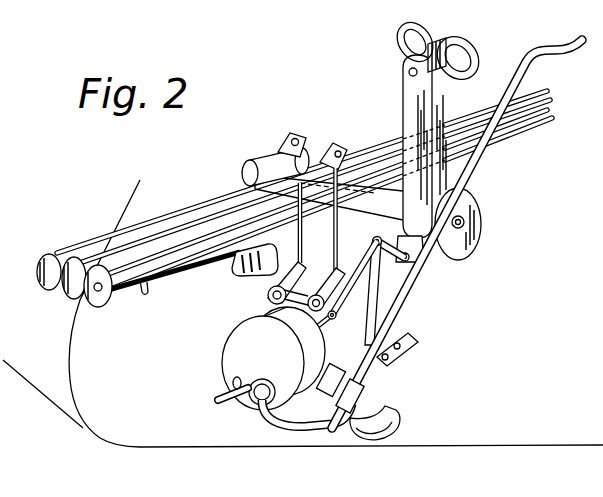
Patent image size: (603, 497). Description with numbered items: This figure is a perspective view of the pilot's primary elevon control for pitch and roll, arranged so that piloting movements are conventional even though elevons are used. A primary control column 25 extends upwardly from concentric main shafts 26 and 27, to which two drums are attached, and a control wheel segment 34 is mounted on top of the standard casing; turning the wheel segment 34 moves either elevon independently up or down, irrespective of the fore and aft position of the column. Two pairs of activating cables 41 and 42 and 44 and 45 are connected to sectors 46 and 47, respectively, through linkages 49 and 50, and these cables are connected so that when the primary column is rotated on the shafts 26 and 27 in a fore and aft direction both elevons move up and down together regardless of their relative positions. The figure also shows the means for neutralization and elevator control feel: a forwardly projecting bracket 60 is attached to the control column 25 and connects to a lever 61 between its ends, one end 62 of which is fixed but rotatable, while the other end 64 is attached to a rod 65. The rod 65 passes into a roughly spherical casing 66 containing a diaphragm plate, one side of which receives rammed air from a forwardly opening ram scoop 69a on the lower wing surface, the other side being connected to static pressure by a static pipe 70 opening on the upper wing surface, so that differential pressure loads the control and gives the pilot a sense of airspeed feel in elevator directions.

The primary control column 25 is at (403, 71).
The main shaft 26 is at (372, 189).
The main shaft 27 is at (470, 222).
The control wheel segment 34 is at (478, 56).
The activating cable 41 is at (148, 290).
The activating cable 42 is at (303, 248).
The activating cable 44 is at (121, 296).
The activating cable 45 is at (267, 230).
The sector 46 is at (240, 297).
The sector 47 is at (233, 273).
The linkage 49 is at (326, 236).
The linkage 50 is at (298, 225).
The forwardly projecting bracket 60 is at (428, 256).
The lever 61 is at (383, 303).
The fixed end of lever 62 is at (365, 333).
The lever end 64 is at (417, 288).
The rod 65 is at (333, 318).
The casing 66 is at (222, 358).
The ram scoop 69a is at (400, 422).
The static pipe 70 is at (400, 323).